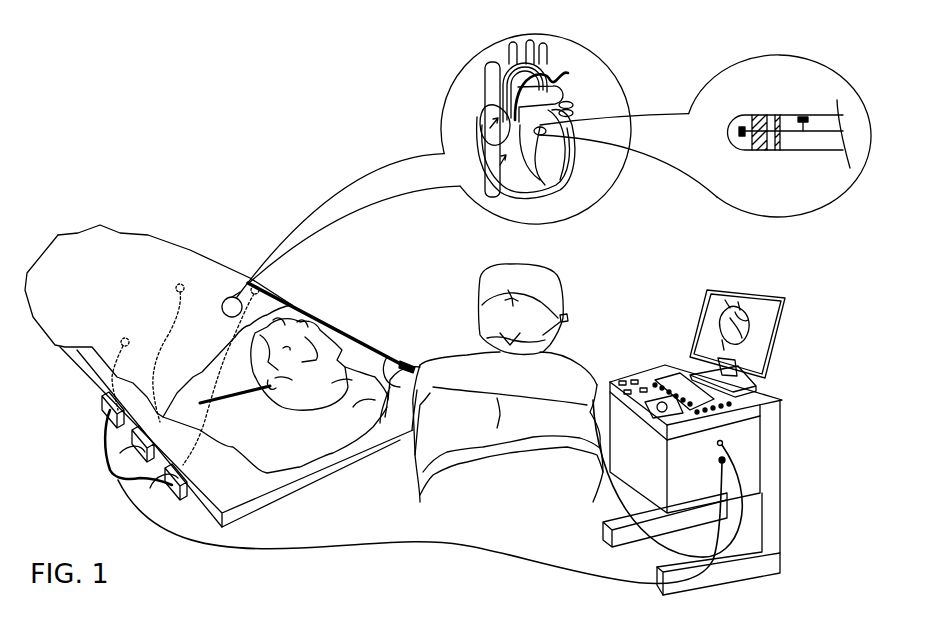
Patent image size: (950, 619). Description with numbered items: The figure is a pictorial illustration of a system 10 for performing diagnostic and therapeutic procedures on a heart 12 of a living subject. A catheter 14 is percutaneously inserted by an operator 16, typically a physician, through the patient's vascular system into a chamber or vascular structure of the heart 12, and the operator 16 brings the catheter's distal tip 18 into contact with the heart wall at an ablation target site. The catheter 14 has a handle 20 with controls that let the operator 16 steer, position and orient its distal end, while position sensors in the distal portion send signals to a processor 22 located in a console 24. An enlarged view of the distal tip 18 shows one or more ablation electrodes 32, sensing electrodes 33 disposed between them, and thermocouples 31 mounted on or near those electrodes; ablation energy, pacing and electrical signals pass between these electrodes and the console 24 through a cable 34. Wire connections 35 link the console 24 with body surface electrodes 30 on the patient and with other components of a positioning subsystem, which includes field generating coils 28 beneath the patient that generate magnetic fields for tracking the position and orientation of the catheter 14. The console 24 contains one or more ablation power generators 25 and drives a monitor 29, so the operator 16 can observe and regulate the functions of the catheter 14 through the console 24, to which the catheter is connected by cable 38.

The system 10 is at (176, 132).
The heart 12 is at (542, 188).
The catheter 14 is at (360, 347).
The operator 16 is at (433, 358).
The distal tip 18 is at (731, 151).
The handle 20 is at (393, 354).
The processor 22 is at (762, 482).
The console 24 is at (792, 386).
The ablation power generators 25 is at (758, 412).
The field generating coils 28 is at (130, 478).
The monitor 29 is at (783, 313).
The body surface electrodes 30 is at (258, 288).
The thermocouples 31 is at (738, 131).
The ablation electrodes 32 is at (760, 114).
The sensing electrodes 33 is at (780, 151).
The cable 34 is at (833, 150).
The wire connections 35 is at (190, 460).
The cable 38 is at (605, 505).